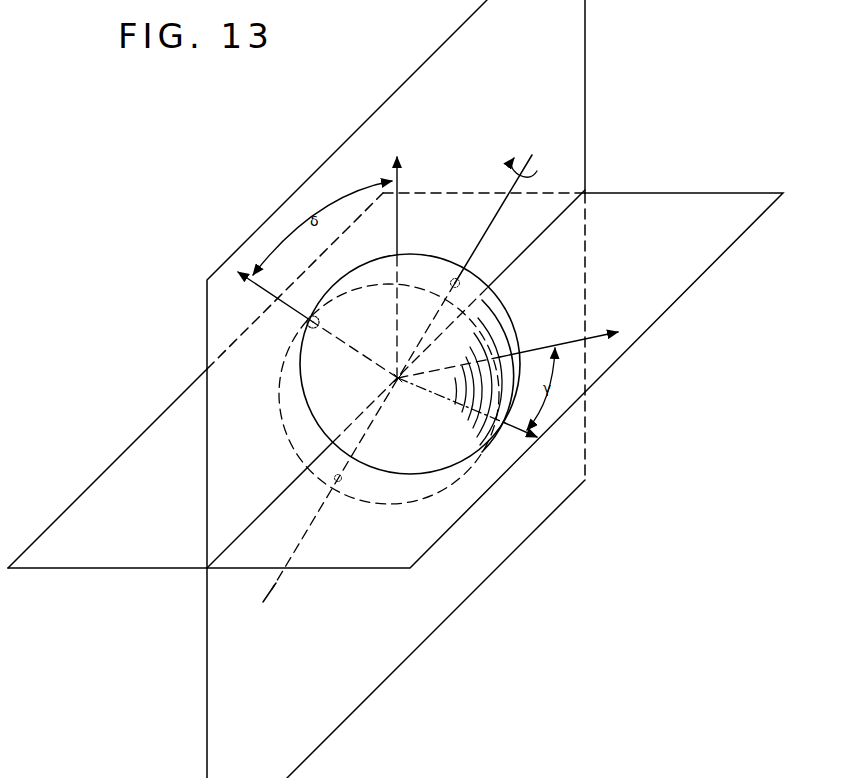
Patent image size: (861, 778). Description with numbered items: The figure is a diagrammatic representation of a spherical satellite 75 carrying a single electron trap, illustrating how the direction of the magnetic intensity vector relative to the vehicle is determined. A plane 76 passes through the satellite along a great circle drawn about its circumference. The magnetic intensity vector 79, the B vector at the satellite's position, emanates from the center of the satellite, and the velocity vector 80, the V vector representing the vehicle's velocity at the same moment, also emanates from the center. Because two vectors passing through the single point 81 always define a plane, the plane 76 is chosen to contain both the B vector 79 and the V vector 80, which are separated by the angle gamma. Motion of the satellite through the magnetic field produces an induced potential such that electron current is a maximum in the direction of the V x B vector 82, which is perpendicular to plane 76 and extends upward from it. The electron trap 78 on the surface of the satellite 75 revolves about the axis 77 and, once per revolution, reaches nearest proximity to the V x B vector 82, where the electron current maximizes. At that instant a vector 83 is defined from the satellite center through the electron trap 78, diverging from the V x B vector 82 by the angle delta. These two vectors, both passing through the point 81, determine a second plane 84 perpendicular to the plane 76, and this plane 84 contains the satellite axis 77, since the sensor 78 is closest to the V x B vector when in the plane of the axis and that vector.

The spherical satellite 75 is at (404, 256).
The plane 76 is at (665, 286).
The axis 77 is at (493, 221).
The electron trap 78 is at (319, 320).
The magnetic intensity vector 79 is at (579, 340).
The velocity vector 80 is at (526, 424).
The point 81 is at (400, 395).
The V x B vector 82 is at (398, 218).
The vector 83 is at (260, 290).
The second plane 84 is at (529, 49).